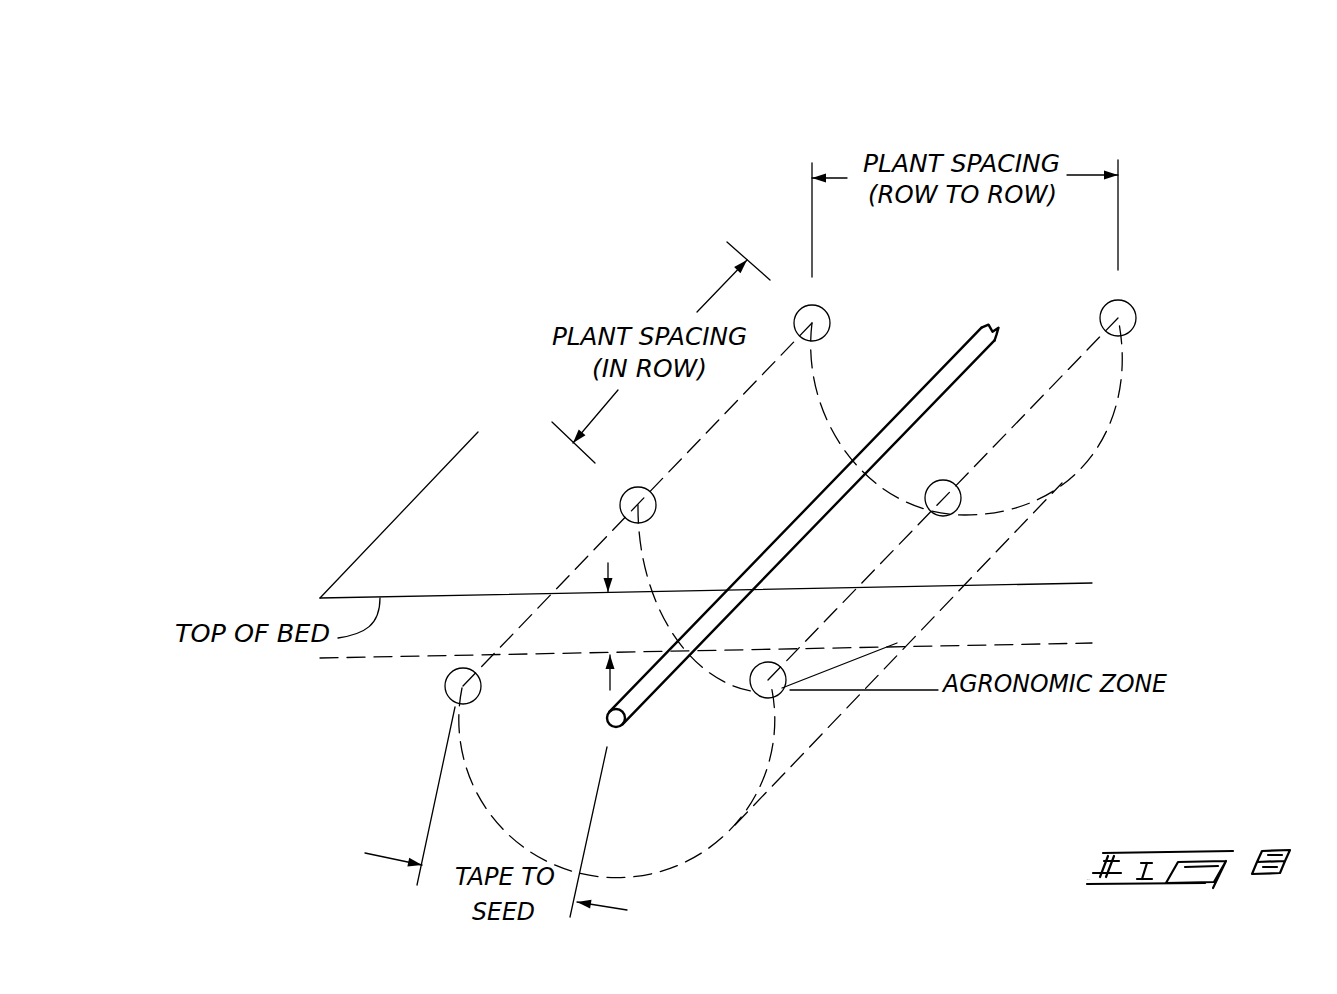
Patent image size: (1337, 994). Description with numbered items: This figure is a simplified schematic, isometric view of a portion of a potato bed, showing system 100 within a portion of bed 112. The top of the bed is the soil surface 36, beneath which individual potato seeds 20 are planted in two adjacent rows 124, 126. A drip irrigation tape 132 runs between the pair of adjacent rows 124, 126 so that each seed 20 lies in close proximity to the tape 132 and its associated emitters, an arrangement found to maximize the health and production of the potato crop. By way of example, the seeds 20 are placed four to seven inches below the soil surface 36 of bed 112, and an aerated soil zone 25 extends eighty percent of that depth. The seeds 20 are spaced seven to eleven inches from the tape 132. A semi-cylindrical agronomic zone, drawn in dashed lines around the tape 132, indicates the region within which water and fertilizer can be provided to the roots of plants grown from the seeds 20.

The system 100 is at (463, 152).
The bed 112 is at (1142, 112).
The potato seeds 20 is at (822, 308).
The soil surface 36 is at (398, 545).
The drip irrigation tape 132 is at (975, 332).
The aerated soil zone 25 is at (612, 626).
The row 124 is at (433, 727).
The row 126 is at (747, 715).